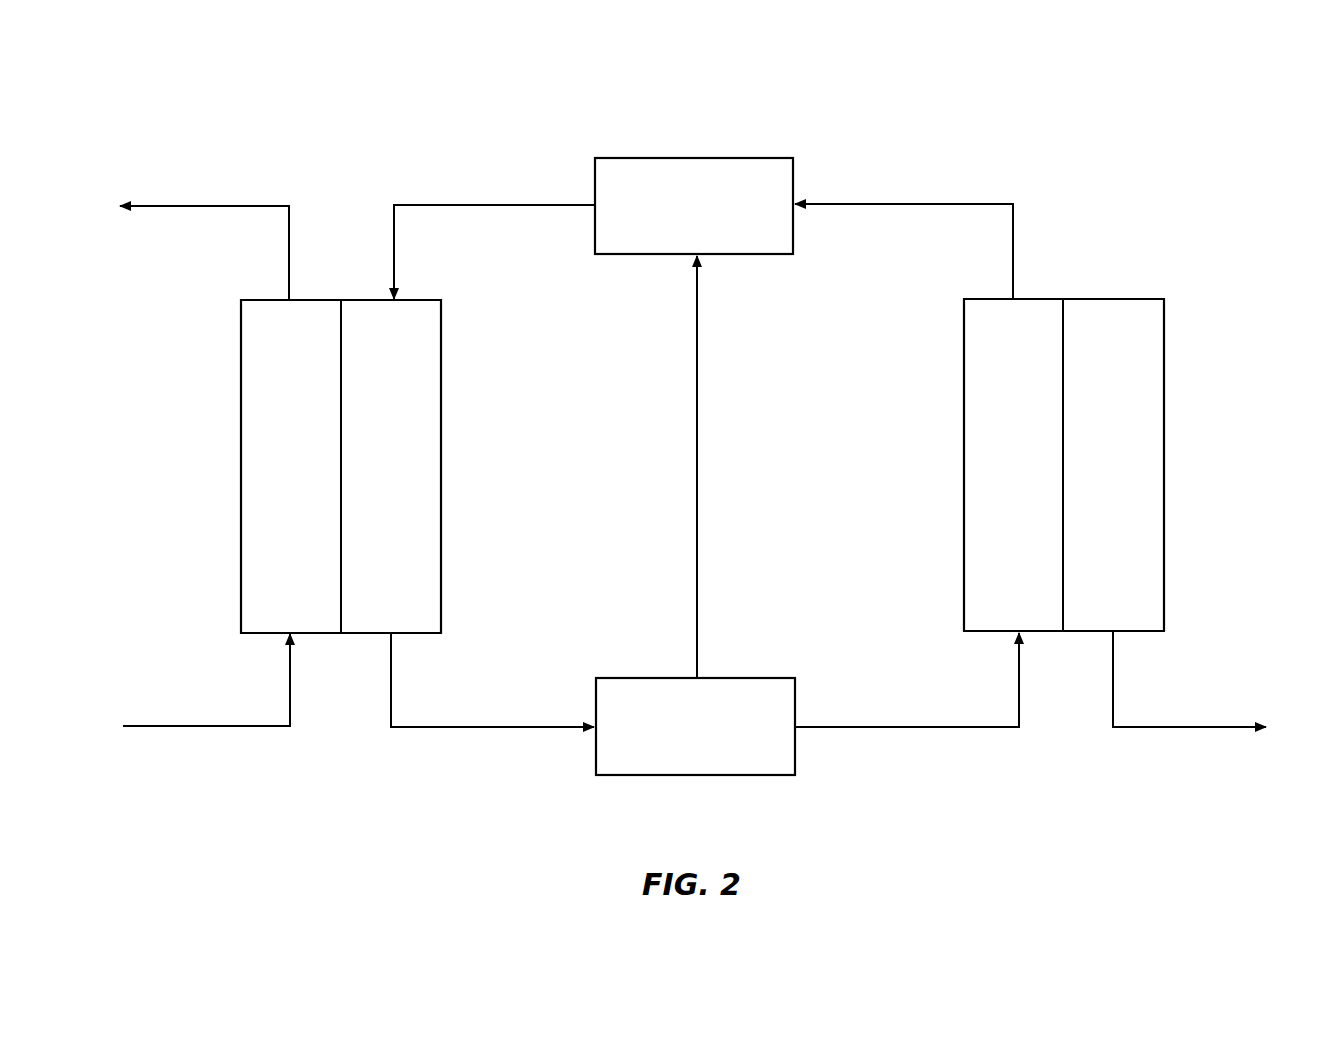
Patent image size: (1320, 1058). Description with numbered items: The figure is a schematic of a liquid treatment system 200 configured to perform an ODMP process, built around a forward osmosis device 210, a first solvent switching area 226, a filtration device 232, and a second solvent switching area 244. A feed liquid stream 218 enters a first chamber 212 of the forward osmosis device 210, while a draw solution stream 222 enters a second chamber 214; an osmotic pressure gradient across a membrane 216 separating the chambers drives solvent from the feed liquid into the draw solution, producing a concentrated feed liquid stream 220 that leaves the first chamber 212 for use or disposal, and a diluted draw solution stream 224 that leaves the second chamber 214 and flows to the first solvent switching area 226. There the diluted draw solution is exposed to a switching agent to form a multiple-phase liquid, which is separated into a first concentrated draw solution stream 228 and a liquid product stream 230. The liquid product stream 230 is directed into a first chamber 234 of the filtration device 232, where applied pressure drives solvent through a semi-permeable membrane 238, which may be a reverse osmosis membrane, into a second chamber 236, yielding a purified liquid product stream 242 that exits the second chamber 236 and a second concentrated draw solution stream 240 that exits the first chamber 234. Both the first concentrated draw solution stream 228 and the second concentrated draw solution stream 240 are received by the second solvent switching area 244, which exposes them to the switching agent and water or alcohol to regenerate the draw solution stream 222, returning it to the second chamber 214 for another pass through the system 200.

The liquid treatment system 200 is at (1040, 130).
The forward osmosis device 210 is at (238, 478).
The first chamber 212 is at (266, 355).
The second chamber 214 is at (420, 392).
The membrane 216 is at (342, 610).
The feed liquid stream 218 is at (218, 729).
The concentrated feed liquid stream 220 is at (191, 206).
The draw solution stream 222 is at (455, 204).
The diluted draw solution stream 224 is at (492, 730).
The first solvent switching area 226 is at (712, 777).
The first concentrated draw solution stream 228 is at (699, 511).
The liquid product stream 230 is at (925, 730).
The filtration device 232 is at (1178, 470).
The first chamber 234 is at (984, 348).
The second chamber 236 is at (1145, 362).
The semi-permeable membrane 238 is at (1064, 330).
The second concentrated draw solution stream 240 is at (906, 203).
The purified liquid product stream 242 is at (1198, 729).
The second solvent switching area 244 is at (700, 157).